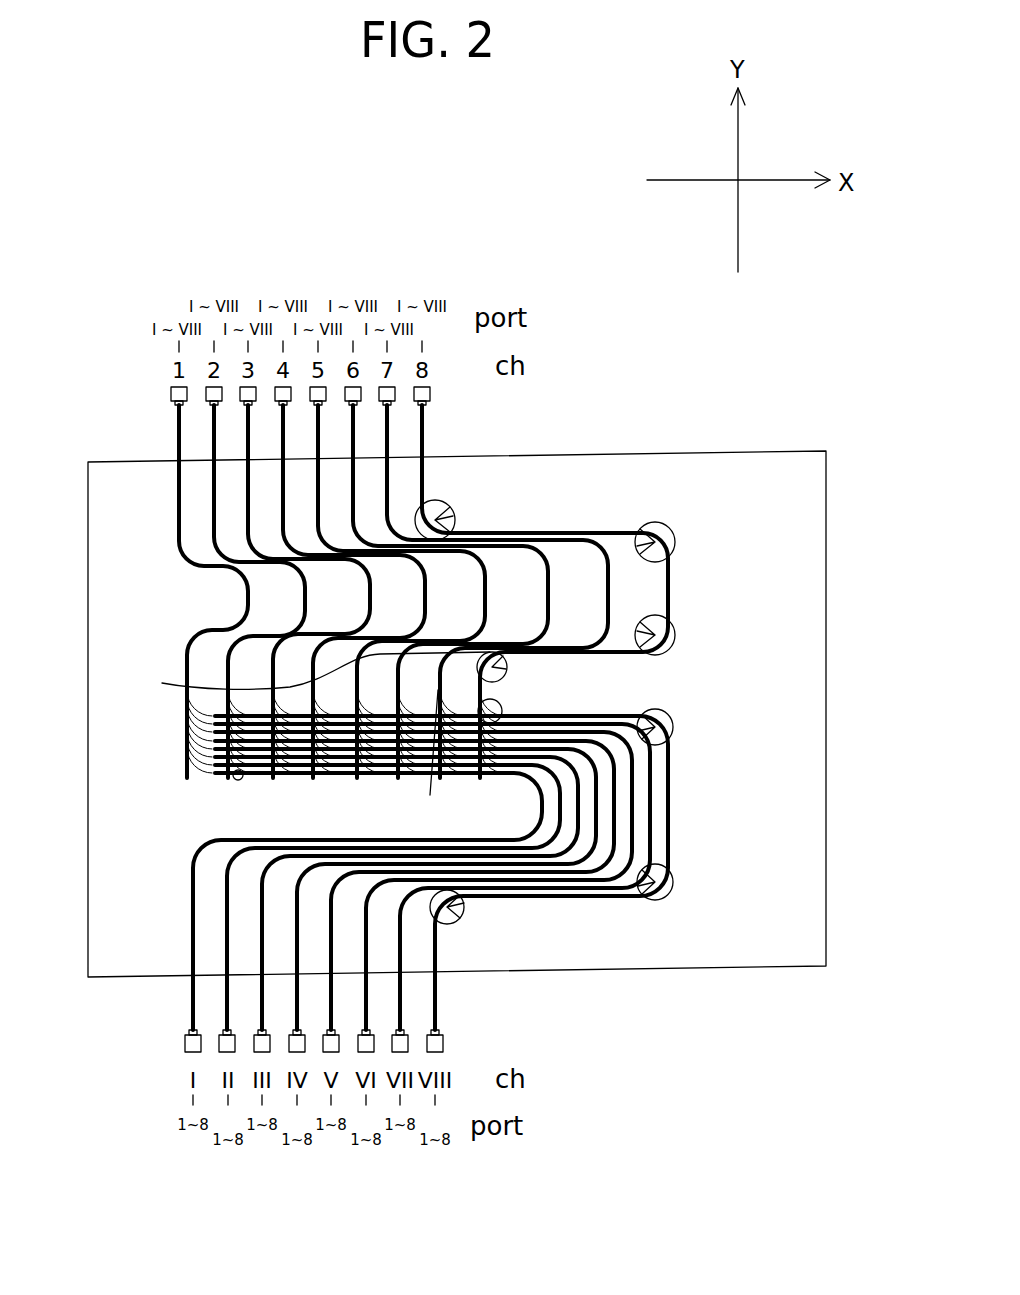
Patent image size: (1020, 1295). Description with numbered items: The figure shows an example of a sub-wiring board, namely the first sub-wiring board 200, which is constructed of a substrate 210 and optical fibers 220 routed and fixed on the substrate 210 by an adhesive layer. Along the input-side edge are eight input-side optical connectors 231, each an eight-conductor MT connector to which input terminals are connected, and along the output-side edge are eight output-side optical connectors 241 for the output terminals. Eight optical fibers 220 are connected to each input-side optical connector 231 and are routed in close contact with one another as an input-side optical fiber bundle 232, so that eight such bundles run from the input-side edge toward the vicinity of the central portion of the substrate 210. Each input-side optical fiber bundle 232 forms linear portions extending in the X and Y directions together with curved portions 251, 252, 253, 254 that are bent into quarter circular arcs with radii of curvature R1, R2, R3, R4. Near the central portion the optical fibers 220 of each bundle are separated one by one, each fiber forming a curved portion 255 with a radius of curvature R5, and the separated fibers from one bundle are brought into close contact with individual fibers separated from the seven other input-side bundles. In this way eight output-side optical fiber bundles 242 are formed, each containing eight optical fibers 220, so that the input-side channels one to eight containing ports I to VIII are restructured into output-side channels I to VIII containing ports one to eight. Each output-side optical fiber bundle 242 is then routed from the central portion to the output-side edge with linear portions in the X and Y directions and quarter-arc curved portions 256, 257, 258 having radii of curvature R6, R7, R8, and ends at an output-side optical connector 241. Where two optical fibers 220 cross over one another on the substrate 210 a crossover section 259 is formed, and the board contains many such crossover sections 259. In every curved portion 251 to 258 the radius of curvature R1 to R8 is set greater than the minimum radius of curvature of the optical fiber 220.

The first sub-wiring board 200 is at (466, 186).
The substrate 210 is at (782, 448).
The optical fibers 220 is at (192, 778).
The input-side optical connectors 231 is at (172, 391).
The input-side optical fiber bundles 232 is at (178, 437).
The output-side optical connectors 241 is at (185, 1042).
The output-side optical fiber bundles 242 is at (190, 1001).
The curved portion 251 is at (496, 508).
The curved portion 252 is at (699, 540).
The curved portion 253 is at (691, 629).
The curved portion 254 is at (295, 678).
The curved portion 255 is at (424, 765).
The curved portion 256 is at (703, 708).
The curved portion 257 is at (698, 894).
The curved portion 258 is at (504, 929).
The crossover sections 259 is at (234, 780).
The radius of curvature R1 is at (440, 515).
The radius of curvature R2 is at (651, 548).
The radius of curvature R3 is at (650, 632).
The radius of curvature R4 is at (497, 671).
The radius of curvature R5 is at (495, 708).
The radius of curvature R6 is at (665, 742).
The radius of curvature R7 is at (668, 876).
The radius of curvature R8 is at (461, 929).